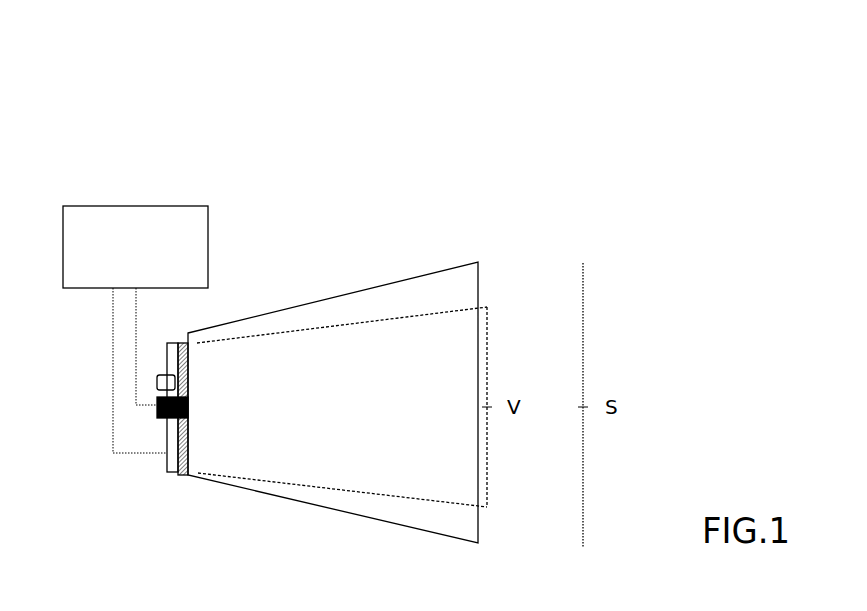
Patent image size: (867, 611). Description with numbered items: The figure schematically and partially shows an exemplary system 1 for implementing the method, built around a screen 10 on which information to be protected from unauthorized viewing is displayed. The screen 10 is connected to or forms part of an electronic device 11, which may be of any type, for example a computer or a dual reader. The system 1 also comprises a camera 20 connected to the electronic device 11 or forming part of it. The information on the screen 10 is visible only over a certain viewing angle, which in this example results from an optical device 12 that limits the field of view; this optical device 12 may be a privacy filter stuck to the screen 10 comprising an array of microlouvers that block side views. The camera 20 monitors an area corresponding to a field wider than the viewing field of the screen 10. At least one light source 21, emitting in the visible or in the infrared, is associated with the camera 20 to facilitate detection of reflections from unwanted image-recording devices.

The system 1 is at (324, 140).
The electronic device 11 is at (112, 213).
The light source 21 is at (167, 375).
The camera 20 is at (170, 418).
The screen 10 is at (175, 472).
The optical device 12 is at (190, 365).